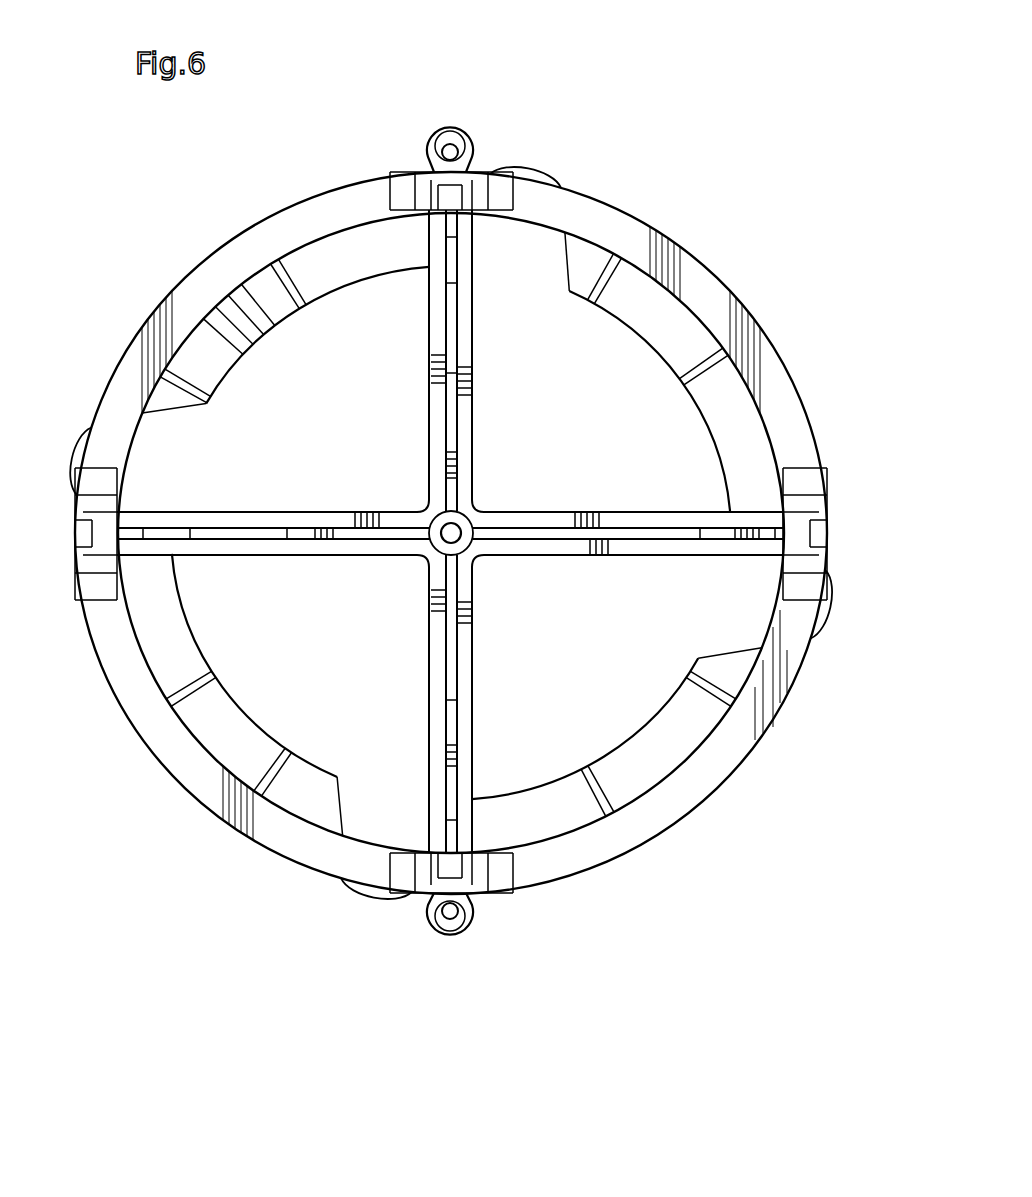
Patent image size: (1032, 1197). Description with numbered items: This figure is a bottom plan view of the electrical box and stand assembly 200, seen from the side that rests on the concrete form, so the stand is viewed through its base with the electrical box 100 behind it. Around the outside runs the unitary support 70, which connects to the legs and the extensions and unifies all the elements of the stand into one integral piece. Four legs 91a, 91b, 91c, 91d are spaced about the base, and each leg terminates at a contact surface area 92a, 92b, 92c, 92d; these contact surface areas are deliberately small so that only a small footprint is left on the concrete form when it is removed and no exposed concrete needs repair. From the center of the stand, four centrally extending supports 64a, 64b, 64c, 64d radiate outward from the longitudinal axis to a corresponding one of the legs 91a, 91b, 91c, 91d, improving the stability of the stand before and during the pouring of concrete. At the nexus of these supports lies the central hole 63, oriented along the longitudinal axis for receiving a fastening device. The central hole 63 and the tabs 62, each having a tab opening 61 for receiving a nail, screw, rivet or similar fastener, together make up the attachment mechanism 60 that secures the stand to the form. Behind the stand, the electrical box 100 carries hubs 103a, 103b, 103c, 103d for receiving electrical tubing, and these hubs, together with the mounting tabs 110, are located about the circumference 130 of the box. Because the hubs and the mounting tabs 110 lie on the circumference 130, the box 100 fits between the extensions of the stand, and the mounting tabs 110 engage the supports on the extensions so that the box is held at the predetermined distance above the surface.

The attachment mechanism 60 is at (431, 541).
The tab openings 61 is at (457, 146).
The tabs 62 is at (416, 133).
The central hole 63 is at (467, 521).
The centrally extending support 64a is at (219, 502).
The centrally extending support 64b is at (483, 717).
The centrally extending support 64c is at (609, 564).
The centrally extending support 64d is at (422, 365).
The unitary support 70 is at (267, 203).
The leg 91a is at (73, 565).
The leg 91b is at (507, 901).
The leg 91c is at (836, 526).
The leg 91d is at (439, 154).
The contact surface area 92a is at (93, 553).
The contact surface area 92b is at (455, 870).
The contact surface area 92c is at (816, 527).
The contact surface area 92d is at (460, 193).
The electrical box 100 is at (658, 427).
The hub 103a is at (257, 294).
The hub 103b is at (216, 732).
The hub 103c is at (660, 760).
The hub 103d is at (654, 323).
The mounting tab 110 is at (544, 164).
The circumference 130 is at (567, 778).
The electrical box and stand assembly 200 is at (656, 197).